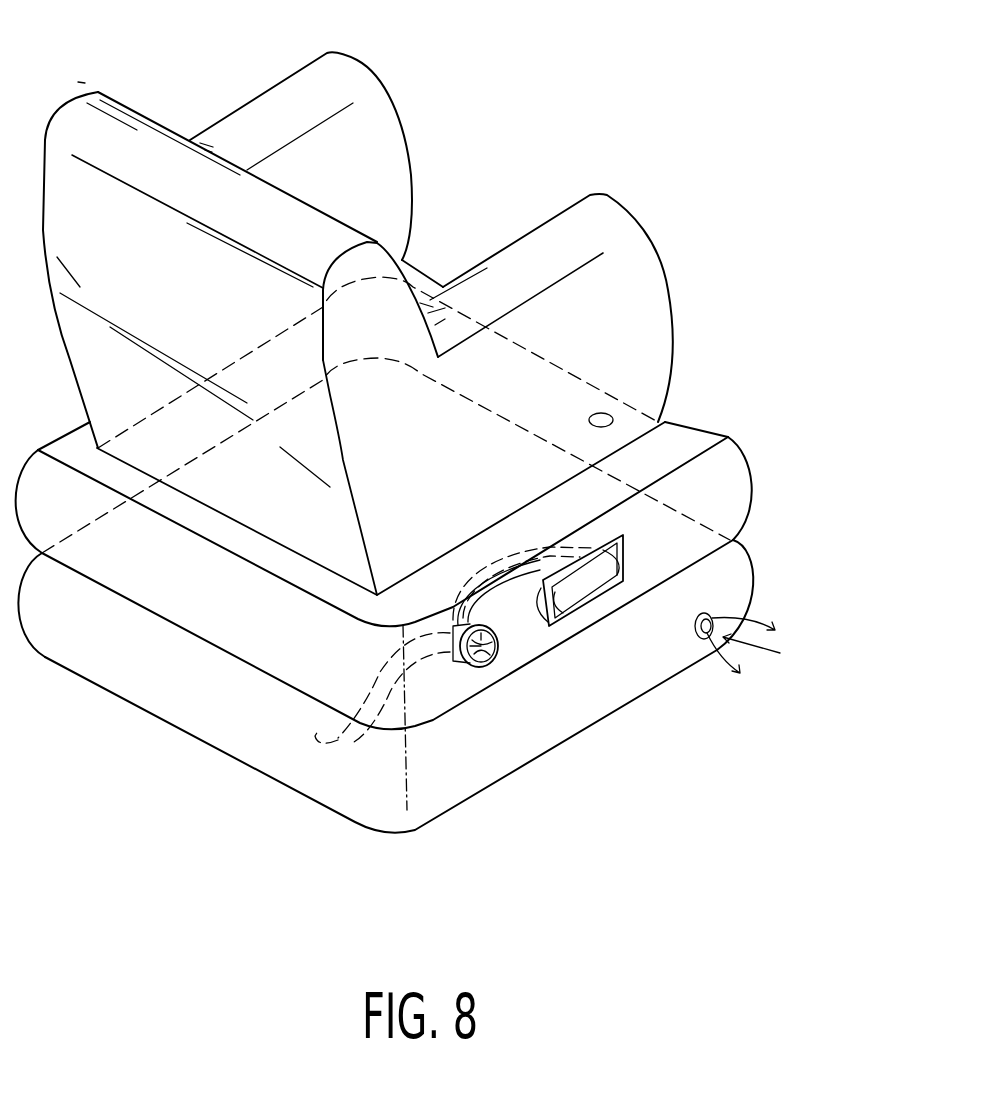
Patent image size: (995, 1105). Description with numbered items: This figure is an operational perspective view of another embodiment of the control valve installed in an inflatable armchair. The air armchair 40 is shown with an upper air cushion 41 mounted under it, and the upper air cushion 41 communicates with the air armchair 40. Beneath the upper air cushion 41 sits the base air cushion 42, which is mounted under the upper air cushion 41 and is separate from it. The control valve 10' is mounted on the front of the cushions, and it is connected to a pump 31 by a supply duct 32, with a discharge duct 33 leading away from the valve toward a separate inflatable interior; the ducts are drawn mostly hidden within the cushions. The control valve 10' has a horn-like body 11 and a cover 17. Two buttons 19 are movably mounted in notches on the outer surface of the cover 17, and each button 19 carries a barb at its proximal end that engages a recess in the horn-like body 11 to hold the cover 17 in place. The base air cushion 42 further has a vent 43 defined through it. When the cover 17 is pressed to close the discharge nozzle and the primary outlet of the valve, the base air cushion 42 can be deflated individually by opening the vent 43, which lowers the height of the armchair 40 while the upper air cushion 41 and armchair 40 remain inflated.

The control valve 10' is at (531, 666).
The horn-like body 11 is at (492, 656).
The cover 17 is at (457, 633).
The buttons 19 is at (495, 637).
The pump 31 is at (580, 590).
The supply duct 32 is at (514, 556).
The discharge duct 33 is at (347, 740).
The air armchair 40 is at (655, 260).
The upper air cushion 41 is at (747, 468).
The base air cushion 42 is at (747, 590).
The vent 43 is at (710, 610).